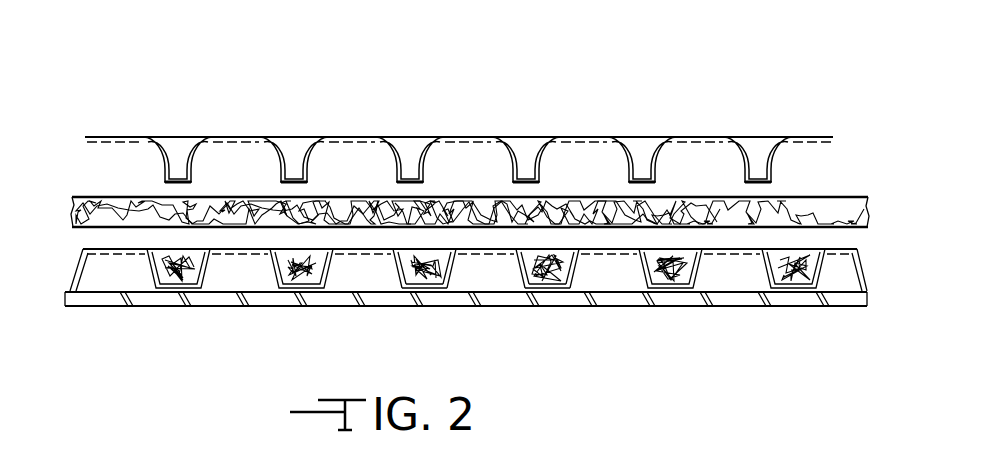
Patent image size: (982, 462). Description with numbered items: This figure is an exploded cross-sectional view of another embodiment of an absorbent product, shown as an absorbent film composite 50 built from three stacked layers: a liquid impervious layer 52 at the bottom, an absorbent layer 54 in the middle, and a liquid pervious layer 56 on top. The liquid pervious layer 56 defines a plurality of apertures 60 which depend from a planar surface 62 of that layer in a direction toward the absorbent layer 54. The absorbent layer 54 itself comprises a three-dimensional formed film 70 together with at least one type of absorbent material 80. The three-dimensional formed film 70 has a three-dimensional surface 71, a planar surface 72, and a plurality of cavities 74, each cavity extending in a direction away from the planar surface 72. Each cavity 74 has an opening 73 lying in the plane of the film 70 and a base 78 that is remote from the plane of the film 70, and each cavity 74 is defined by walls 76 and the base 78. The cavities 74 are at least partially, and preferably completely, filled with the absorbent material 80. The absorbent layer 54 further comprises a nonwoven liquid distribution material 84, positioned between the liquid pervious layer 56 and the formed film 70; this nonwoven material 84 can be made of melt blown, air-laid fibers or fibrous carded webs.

The absorbent film composite 50 is at (147, 112).
The liquid impervious layer 52 is at (113, 306).
The absorbent layer 54 is at (64, 250).
The liquid pervious layer 56 is at (232, 130).
The apertures 60 is at (302, 136).
The planar surface 62 is at (462, 136).
The three-dimensional formed film 70 is at (238, 240).
The three-dimensional surface 71 is at (731, 268).
The planar surface 72 is at (366, 257).
The opening 73 is at (427, 240).
The cavities 74 is at (294, 284).
The walls 76 is at (452, 266).
The base 78 is at (423, 284).
The absorbent material 80 is at (559, 288).
The nonwoven liquid distribution material 84 is at (823, 199).